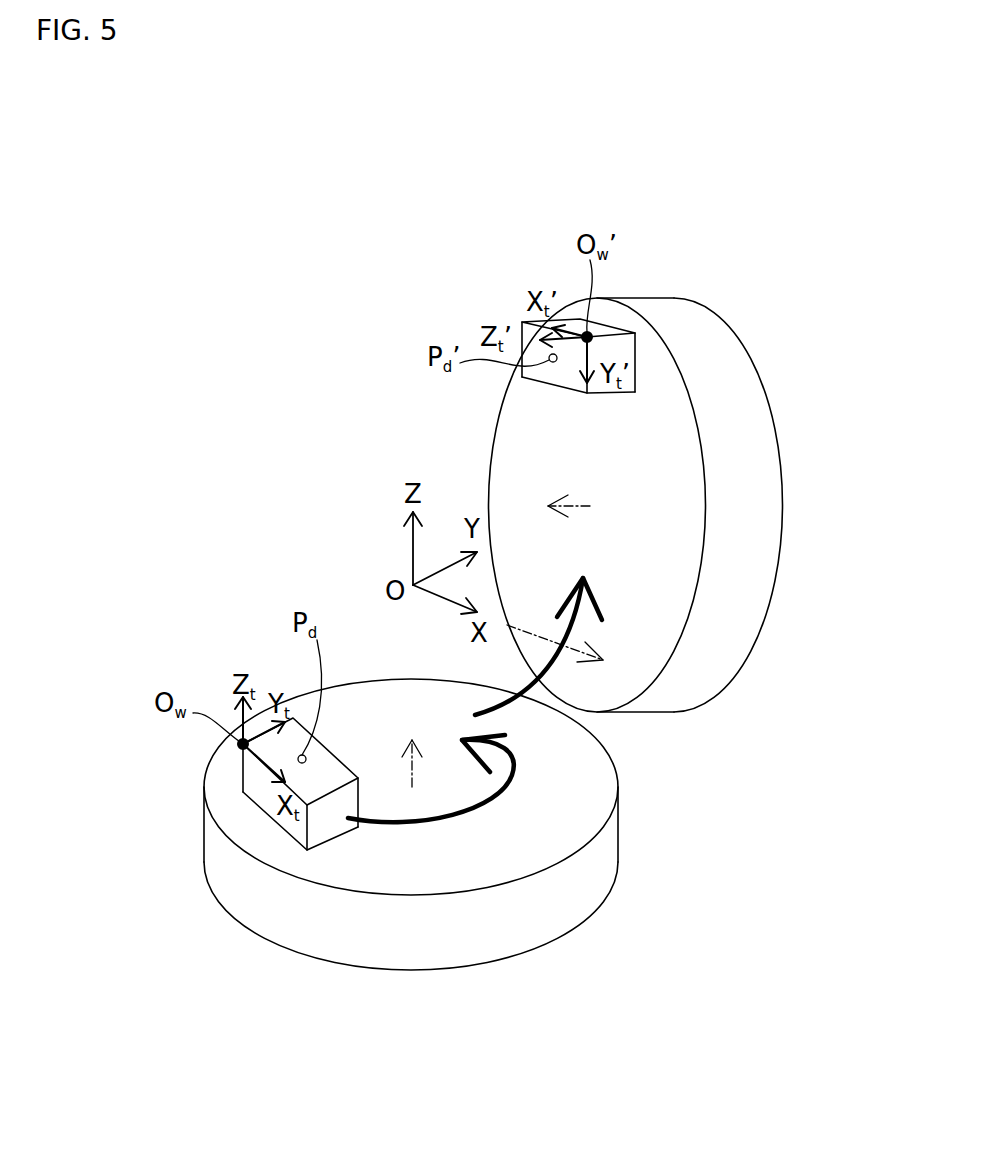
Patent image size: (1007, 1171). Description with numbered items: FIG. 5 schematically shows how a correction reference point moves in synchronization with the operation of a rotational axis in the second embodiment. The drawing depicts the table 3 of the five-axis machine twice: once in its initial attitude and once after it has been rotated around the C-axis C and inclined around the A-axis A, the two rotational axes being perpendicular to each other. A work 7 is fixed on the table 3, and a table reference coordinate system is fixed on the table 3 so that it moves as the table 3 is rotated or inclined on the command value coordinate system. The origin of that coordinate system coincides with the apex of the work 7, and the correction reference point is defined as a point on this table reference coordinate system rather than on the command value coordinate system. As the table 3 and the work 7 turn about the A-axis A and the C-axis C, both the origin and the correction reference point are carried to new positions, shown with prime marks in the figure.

The table 3 is at (658, 700).
The work 7 is at (335, 772).
The A-axis A is at (550, 646).
The C-axis C is at (469, 657).